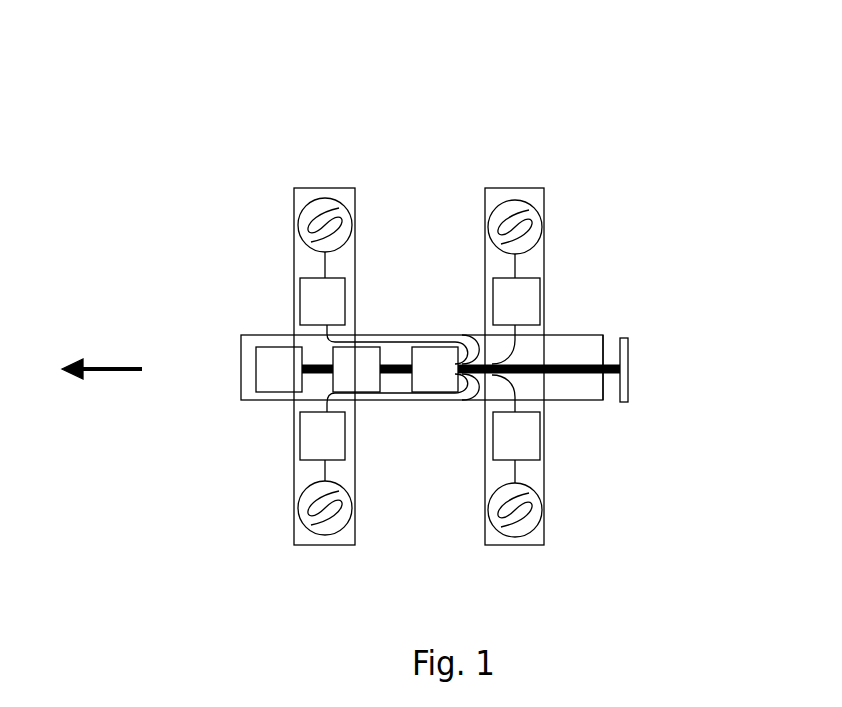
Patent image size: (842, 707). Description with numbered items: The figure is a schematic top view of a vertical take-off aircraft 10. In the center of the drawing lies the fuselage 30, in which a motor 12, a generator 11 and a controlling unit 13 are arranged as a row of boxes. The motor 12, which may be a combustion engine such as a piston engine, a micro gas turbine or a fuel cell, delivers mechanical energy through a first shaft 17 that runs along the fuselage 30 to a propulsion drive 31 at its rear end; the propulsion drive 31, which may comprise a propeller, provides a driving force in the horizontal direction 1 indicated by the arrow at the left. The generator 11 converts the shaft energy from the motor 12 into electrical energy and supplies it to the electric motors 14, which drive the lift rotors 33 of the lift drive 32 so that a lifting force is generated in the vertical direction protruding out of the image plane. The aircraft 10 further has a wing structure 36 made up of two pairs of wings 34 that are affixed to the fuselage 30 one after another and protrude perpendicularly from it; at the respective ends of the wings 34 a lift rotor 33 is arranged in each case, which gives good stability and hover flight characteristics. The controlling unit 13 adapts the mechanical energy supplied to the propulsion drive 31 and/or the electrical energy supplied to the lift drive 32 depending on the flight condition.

The horizontal direction 1 is at (97, 367).
The vertical take-off aircraft 10 is at (215, 88).
The generator 11 is at (363, 378).
The motor 12 is at (270, 373).
The controlling unit 13 is at (442, 367).
The electric motors 14 is at (318, 313).
The first shaft 17 is at (588, 373).
The fuselage 30 is at (588, 348).
The propulsion drive 31 is at (651, 382).
The lift drive 32 is at (309, 197).
The lift rotors 33 is at (335, 215).
The wings 34 is at (278, 252).
The wing structure 36 is at (636, 140).